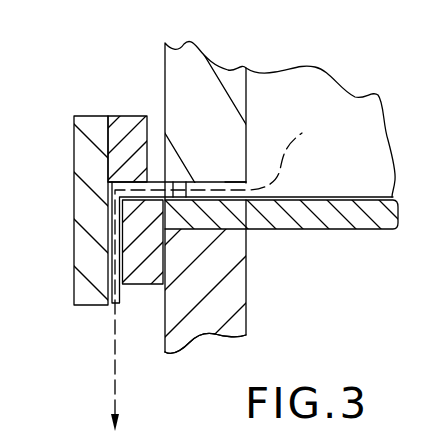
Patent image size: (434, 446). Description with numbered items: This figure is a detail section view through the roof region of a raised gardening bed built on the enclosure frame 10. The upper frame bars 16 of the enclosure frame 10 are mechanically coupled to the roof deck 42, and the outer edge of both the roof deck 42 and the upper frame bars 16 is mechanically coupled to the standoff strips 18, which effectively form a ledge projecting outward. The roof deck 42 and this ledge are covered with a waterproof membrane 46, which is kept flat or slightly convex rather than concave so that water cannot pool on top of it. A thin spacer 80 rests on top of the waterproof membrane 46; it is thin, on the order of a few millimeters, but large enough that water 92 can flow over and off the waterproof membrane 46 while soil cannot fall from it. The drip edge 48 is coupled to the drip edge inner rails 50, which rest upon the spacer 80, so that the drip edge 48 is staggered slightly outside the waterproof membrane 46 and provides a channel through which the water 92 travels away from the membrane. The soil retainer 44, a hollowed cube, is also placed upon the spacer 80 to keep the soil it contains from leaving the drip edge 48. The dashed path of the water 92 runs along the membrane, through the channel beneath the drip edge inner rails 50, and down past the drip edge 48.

The enclosure frame 10 is at (258, 278).
The upper frame bars 16 is at (204, 316).
The standoff strips 18 is at (146, 297).
The roof deck 42 is at (347, 231).
The soil retainer 44 is at (152, 96).
The waterproof membrane 46 is at (310, 186).
The drip edge 48 is at (74, 157).
The drip edge inner rails 50 is at (122, 128).
The spacer 80 is at (246, 183).
The water 92 is at (311, 132).